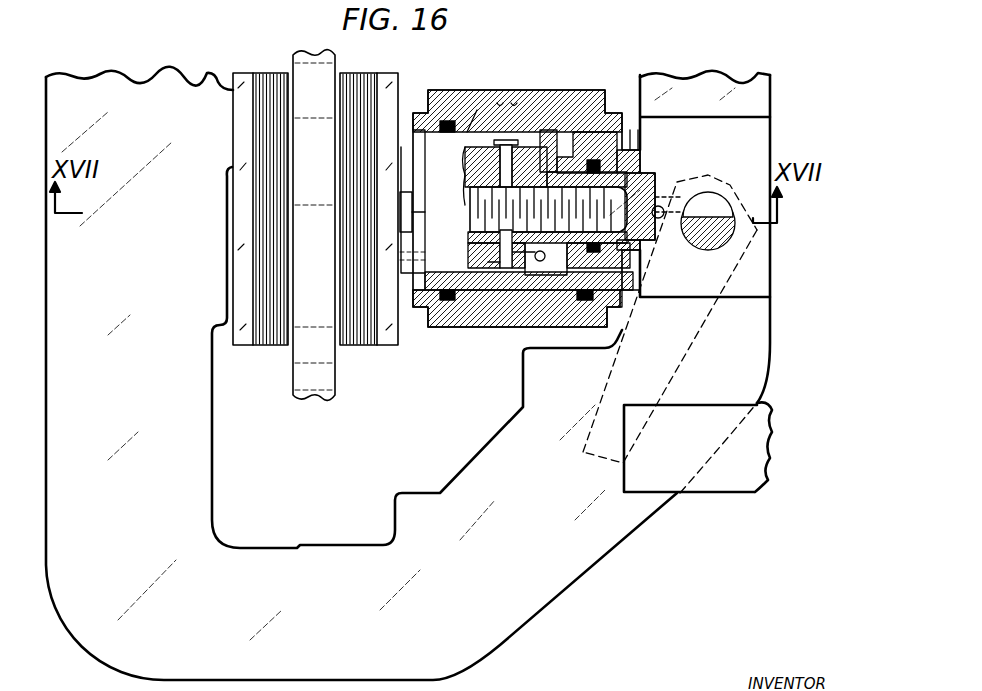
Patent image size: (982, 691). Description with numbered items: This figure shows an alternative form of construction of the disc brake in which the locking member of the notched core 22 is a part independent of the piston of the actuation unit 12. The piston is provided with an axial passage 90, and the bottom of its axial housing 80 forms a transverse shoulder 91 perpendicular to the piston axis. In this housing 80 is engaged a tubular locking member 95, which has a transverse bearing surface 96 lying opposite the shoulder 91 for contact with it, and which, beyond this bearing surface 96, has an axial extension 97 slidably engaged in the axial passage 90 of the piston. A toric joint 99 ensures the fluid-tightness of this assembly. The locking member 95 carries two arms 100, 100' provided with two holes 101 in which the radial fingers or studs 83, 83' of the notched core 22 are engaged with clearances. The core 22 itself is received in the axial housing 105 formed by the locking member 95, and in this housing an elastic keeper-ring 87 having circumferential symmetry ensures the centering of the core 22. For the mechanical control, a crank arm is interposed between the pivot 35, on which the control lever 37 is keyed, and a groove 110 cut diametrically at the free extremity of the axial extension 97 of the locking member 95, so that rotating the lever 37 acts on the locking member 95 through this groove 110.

The actuation unit 12 is at (590, 84).
The toric joint 99 is at (582, 92).
The arm 100 is at (440, 100).
The axial housing 80 is at (528, 172).
The transverse shoulder 91 is at (560, 135).
The axial passage 90 is at (636, 132).
The axial extension 97 is at (645, 173).
The notched core 22 is at (518, 140).
The radial finger or stud 83 is at (539, 119).
The tubular locking member 95 is at (482, 153).
The hole 101 is at (468, 180).
The elastic keeper-ring 87 is at (537, 261).
The axial housing 105 is at (552, 250).
The radial finger or stud 83' is at (492, 307).
The arm 100' is at (475, 308).
The transverse bearing surface 96 is at (642, 292).
The groove 110 is at (666, 219).
The pivot 35 is at (730, 205).
The control lever 37 is at (583, 456).